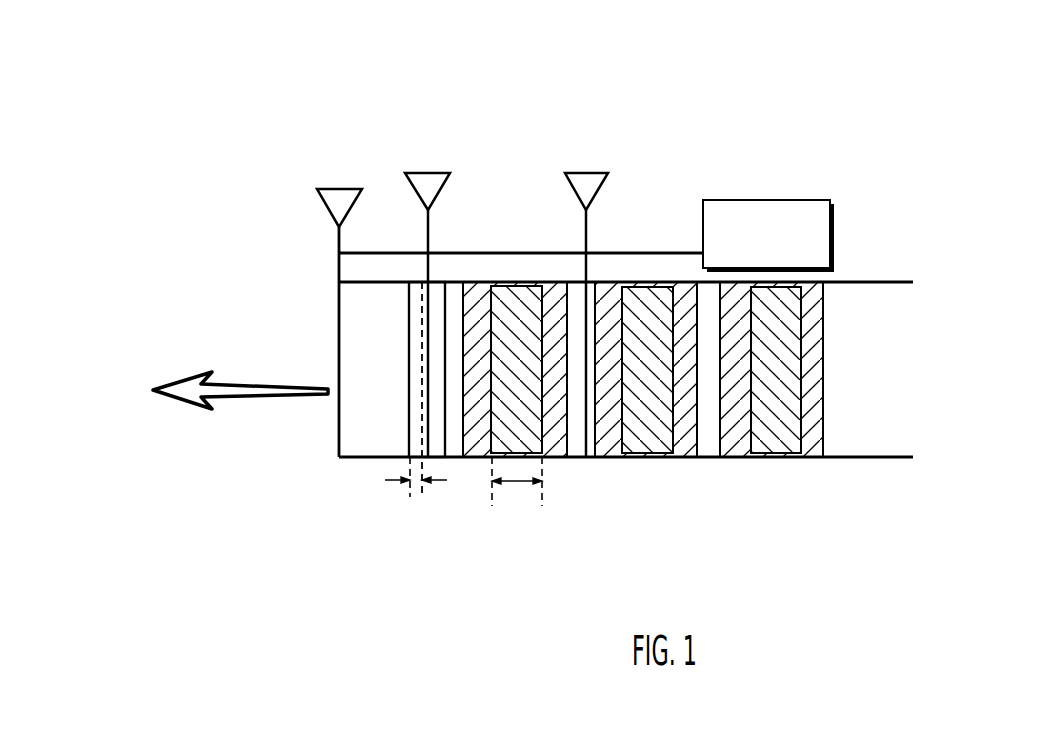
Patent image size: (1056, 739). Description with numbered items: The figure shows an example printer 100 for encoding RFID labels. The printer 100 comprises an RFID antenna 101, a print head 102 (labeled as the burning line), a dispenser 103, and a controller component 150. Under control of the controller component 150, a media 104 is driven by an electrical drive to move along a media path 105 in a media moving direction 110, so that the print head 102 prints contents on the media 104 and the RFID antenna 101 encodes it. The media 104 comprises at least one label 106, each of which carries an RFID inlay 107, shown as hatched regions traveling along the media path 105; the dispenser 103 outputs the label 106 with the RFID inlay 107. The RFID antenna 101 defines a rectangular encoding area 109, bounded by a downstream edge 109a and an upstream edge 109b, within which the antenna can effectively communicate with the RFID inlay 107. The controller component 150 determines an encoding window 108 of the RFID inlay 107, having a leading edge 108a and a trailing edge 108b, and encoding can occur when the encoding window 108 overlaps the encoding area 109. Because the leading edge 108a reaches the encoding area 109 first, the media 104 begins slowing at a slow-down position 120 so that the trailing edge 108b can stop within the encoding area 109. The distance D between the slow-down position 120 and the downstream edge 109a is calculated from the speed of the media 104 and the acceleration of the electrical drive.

The printer 100 is at (972, 118).
The RFID antenna 101 is at (428, 231).
The print head 102 is at (586, 236).
The dispenser 103 is at (339, 233).
The media 104 is at (560, 448).
The media path 105 is at (358, 456).
The label 106 is at (463, 430).
The RFID inlay 107 is at (492, 380).
The encoding window 108 is at (517, 487).
The leading edge 108a is at (492, 505).
The trailing edge 108b is at (542, 502).
The encoding area 109 is at (418, 356).
The downstream edge 109a is at (409, 382).
The upstream edge 109b is at (445, 313).
The media moving direction 110 is at (272, 397).
The slow-down position 120 is at (422, 497).
The controller component 150 is at (793, 200).
The distance D is at (410, 497).